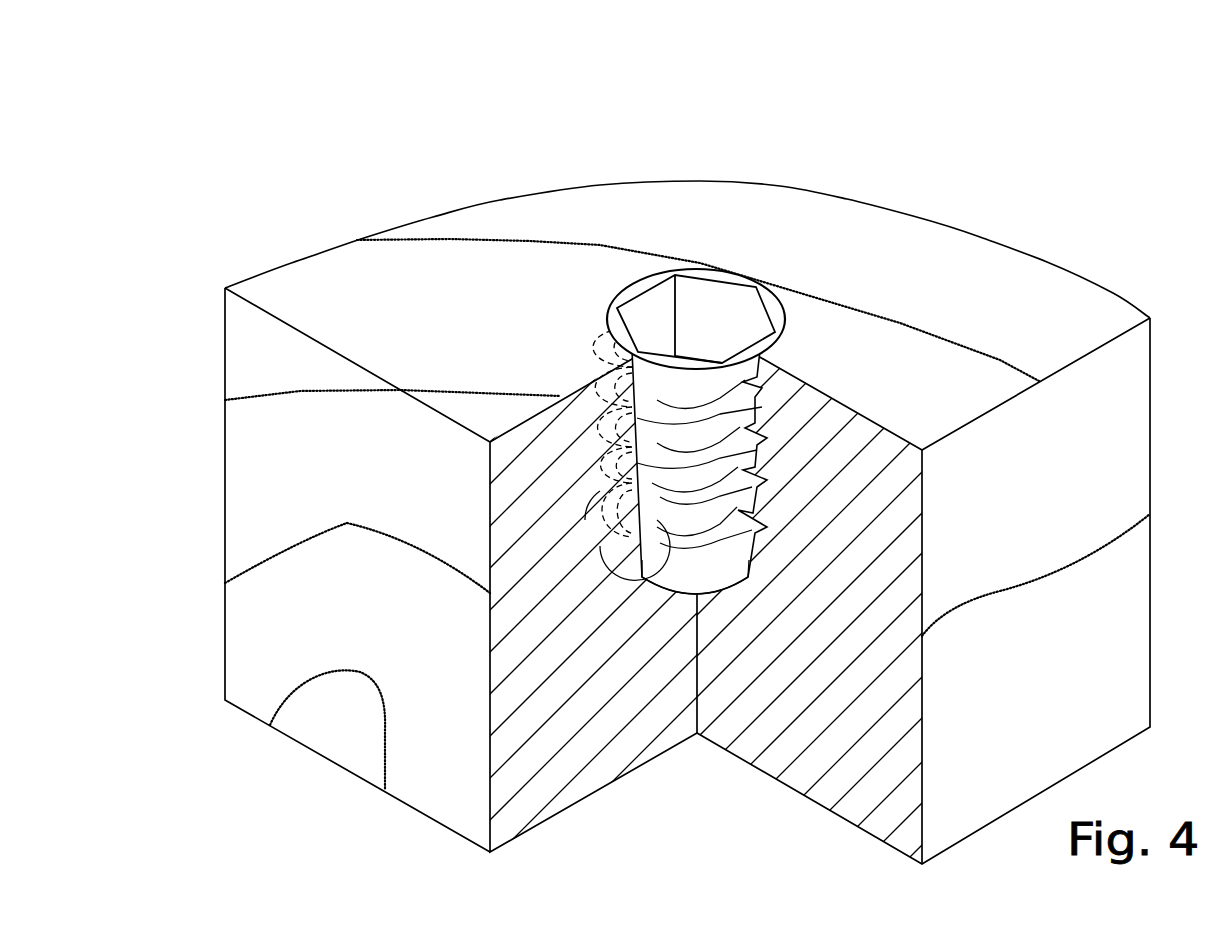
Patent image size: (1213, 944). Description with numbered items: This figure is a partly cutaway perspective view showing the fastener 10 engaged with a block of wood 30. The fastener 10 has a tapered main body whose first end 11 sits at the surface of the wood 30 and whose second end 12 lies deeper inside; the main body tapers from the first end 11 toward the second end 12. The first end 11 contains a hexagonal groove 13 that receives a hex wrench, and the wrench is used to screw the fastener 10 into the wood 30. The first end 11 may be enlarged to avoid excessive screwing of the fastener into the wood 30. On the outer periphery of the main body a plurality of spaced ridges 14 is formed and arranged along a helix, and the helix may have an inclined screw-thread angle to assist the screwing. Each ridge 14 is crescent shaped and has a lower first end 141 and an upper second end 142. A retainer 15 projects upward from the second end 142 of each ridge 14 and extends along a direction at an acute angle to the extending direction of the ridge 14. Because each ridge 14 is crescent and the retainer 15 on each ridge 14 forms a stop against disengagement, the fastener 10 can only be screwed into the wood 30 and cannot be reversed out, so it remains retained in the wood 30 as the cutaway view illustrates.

The fastener 10 is at (736, 326).
The first end 11 is at (778, 303).
The second end 12 is at (727, 563).
The hexagonal groove 13 is at (715, 308).
The ridge 14 is at (691, 455).
The lower first end 141 is at (632, 412).
The upper second end 142 is at (720, 405).
The retainer 15 is at (760, 357).
The wood 30 is at (360, 712).